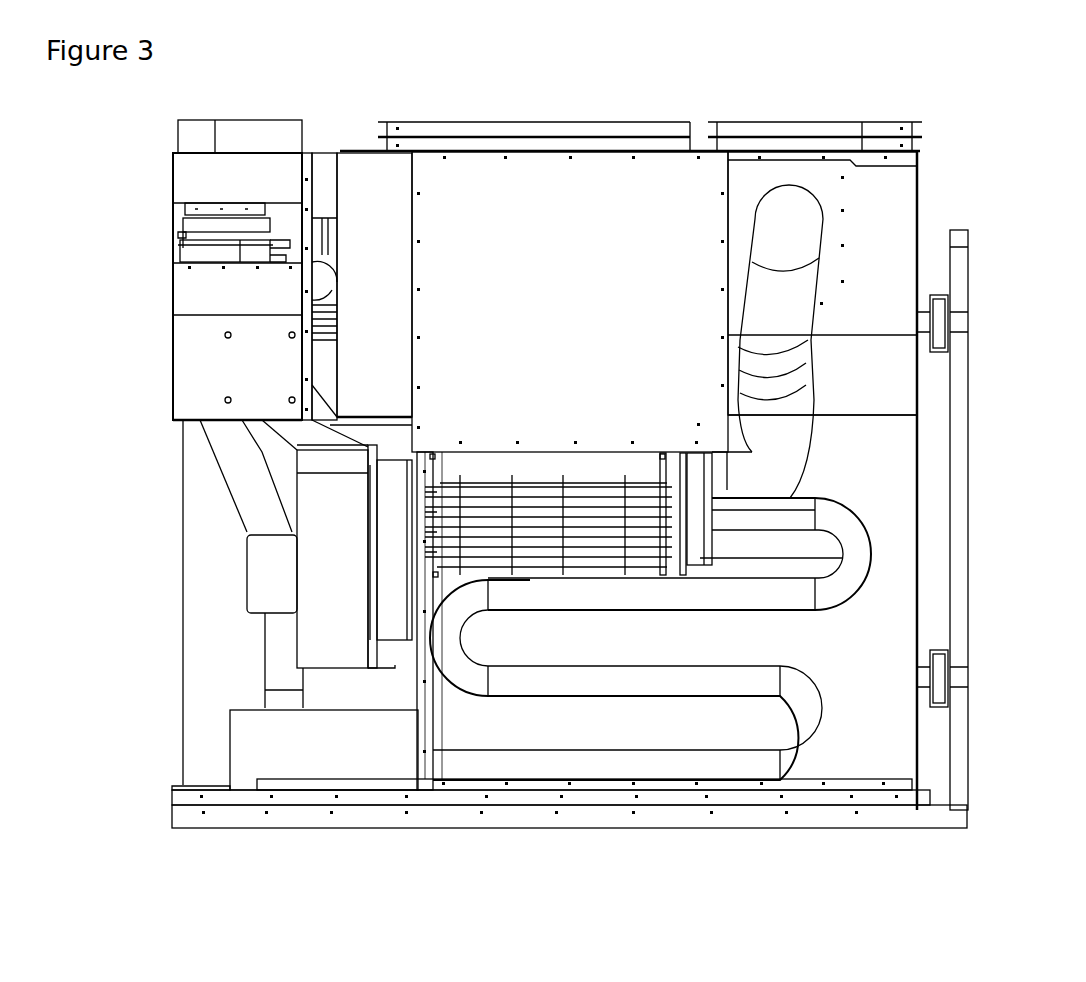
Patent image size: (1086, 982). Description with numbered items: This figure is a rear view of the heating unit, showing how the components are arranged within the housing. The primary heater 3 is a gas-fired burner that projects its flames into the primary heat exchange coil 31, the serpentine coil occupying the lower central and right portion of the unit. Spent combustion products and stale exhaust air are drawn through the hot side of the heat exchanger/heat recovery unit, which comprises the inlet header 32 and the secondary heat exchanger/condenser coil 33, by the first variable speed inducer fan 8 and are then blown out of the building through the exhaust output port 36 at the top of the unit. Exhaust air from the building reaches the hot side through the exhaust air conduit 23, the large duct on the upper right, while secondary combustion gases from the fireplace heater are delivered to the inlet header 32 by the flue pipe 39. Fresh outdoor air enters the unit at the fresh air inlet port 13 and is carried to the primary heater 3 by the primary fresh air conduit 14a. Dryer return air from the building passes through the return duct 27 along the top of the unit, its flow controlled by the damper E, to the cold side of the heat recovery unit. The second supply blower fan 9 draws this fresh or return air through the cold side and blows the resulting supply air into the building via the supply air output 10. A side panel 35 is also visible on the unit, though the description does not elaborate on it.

The primary heater 3 is at (258, 758).
The first variable speed inducer fan 8 is at (340, 534).
The second supply blower fan 9 is at (485, 253).
The supply air output 10 is at (817, 118).
The fresh air inlet port 13 is at (185, 128).
The primary fresh air conduit 14a is at (217, 450).
The exhaust air conduit 23 is at (803, 225).
The return duct 27 is at (432, 120).
The primary heat exchange coil 31 is at (824, 738).
The inlet header 32 is at (700, 513).
The secondary heat exchanger/condenser coil 33 is at (493, 535).
The side panel 35 is at (393, 583).
The exhaust output port 36 is at (265, 128).
The flue pipe 39 is at (770, 543).
The damper E is at (517, 130).